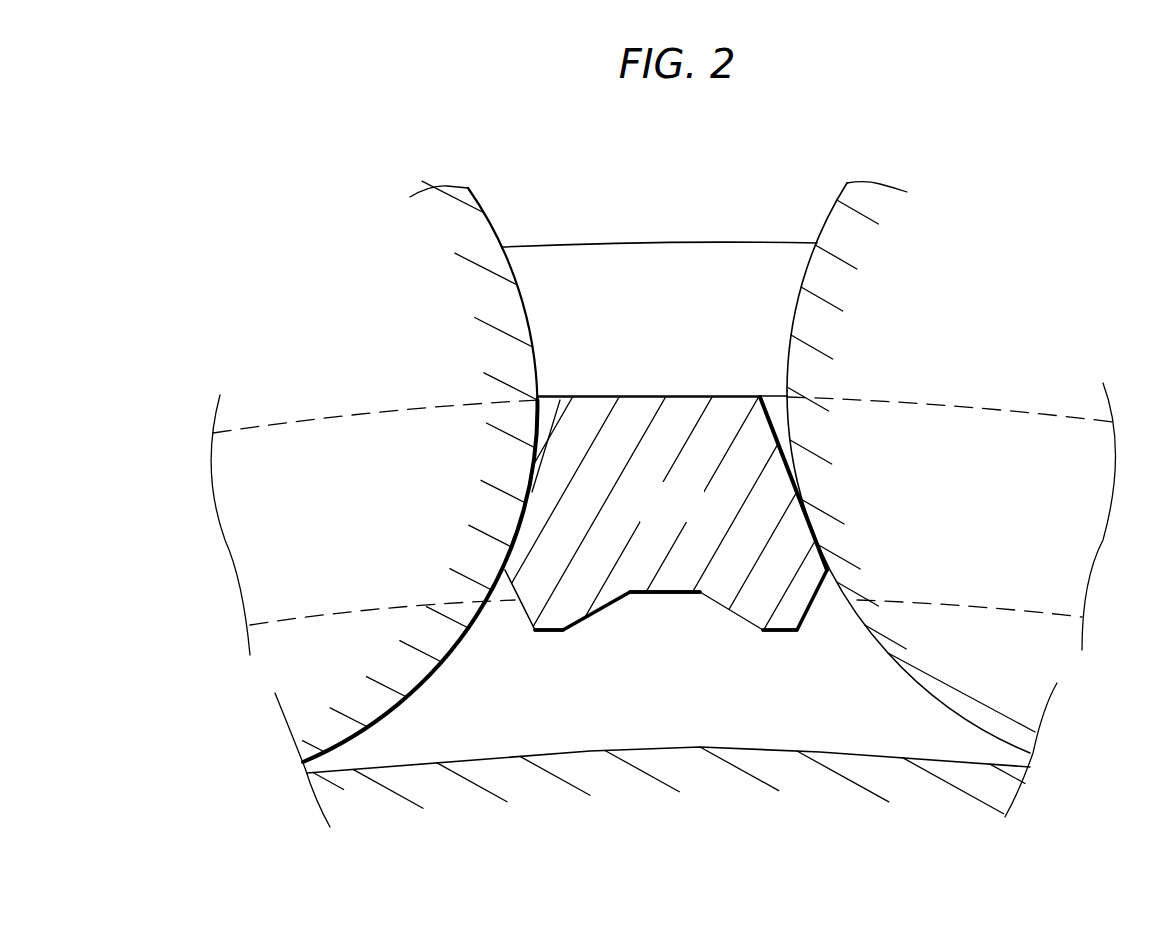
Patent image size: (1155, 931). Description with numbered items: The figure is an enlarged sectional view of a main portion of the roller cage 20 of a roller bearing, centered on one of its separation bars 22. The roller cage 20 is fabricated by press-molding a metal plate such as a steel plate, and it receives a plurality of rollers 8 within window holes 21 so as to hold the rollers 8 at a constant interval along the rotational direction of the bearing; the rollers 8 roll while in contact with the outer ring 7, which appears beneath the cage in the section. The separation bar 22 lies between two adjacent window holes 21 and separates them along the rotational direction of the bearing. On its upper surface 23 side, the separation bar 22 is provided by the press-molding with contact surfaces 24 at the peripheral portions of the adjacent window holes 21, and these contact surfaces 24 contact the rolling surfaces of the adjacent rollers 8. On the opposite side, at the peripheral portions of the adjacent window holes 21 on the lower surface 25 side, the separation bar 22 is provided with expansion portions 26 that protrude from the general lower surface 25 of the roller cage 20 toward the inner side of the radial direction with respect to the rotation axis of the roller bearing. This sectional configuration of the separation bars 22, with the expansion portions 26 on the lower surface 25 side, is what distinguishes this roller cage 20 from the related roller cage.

The outer ring 7 is at (665, 853).
The roller 8 is at (398, 313).
The roller cage 20 is at (561, 244).
The window hole 21 is at (332, 510).
The separation bar 22 is at (652, 511).
The upper surface 23 is at (670, 394).
The contact surface 24 is at (537, 425).
The lower surface 25 is at (663, 598).
The expansion portion 26 is at (557, 618).